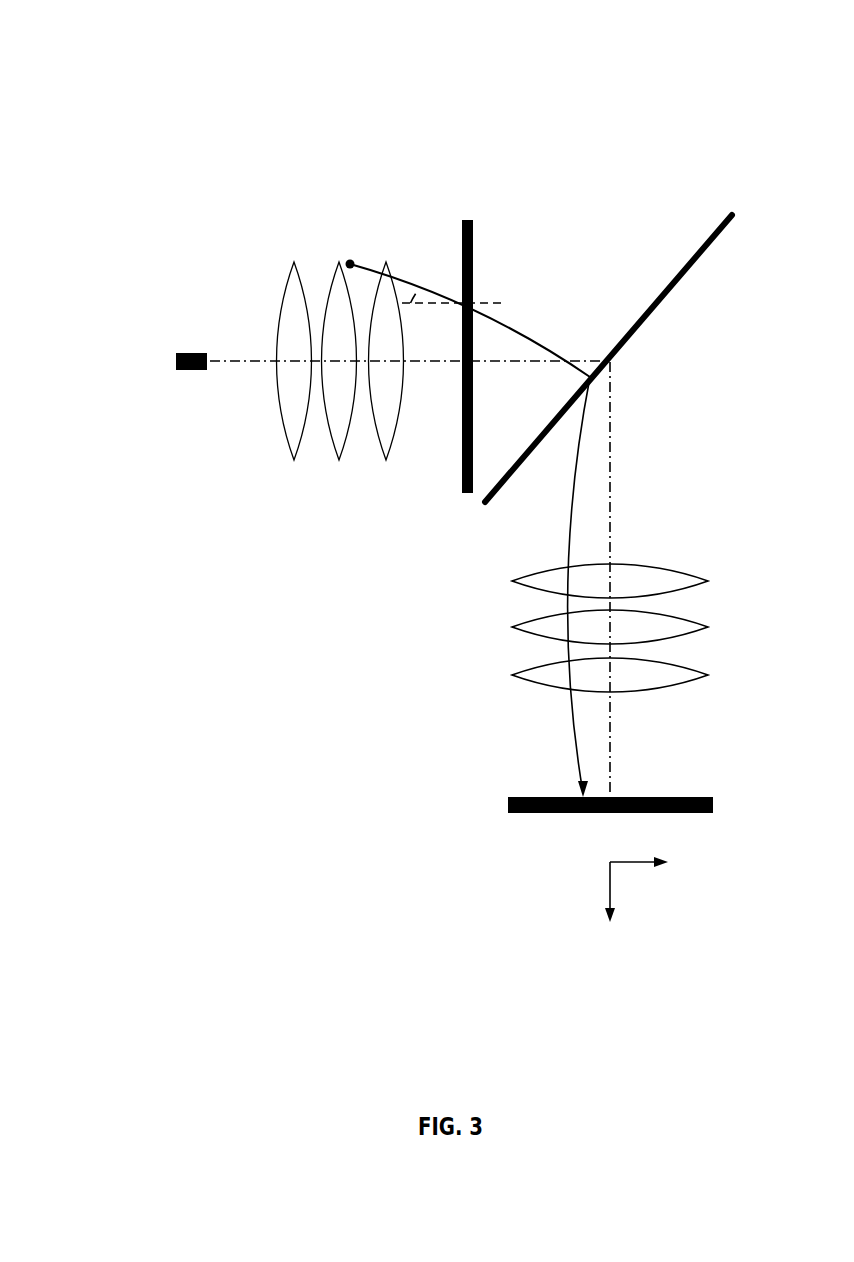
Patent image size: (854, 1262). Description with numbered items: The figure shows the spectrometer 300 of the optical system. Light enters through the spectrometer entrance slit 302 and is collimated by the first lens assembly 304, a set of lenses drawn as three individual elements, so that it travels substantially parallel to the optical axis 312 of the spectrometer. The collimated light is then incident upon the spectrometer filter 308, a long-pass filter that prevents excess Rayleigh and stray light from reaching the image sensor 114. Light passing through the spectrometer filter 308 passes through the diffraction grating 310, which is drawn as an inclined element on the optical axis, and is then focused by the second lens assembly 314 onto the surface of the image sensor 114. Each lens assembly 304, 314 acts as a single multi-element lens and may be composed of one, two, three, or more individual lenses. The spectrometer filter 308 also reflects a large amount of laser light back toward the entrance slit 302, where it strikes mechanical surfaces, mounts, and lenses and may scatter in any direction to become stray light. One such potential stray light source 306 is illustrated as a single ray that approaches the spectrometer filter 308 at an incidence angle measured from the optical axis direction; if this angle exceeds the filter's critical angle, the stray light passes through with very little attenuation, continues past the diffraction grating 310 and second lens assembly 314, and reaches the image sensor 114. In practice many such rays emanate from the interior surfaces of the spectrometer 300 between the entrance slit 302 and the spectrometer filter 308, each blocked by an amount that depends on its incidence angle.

The spectrometer 300 is at (430, 36).
The spectrometer entrance slit 302 is at (126, 375).
The first lens assembly 304 is at (346, 389).
The potential stray light source 306 is at (418, 490).
The spectrometer filter 308 is at (467, 330).
The diffraction grating 310 is at (637, 358).
The optical axis 312 is at (630, 488).
The second lens assembly 314 is at (518, 628).
The image sensor 114 is at (570, 818).